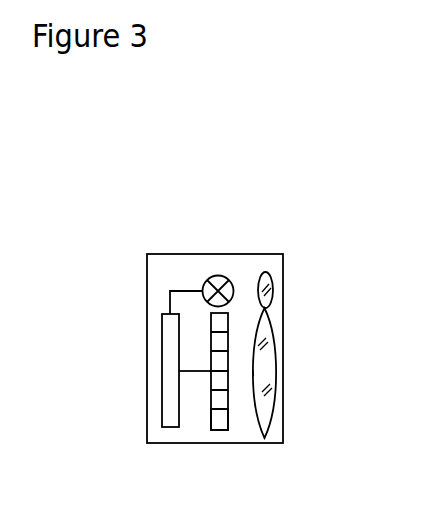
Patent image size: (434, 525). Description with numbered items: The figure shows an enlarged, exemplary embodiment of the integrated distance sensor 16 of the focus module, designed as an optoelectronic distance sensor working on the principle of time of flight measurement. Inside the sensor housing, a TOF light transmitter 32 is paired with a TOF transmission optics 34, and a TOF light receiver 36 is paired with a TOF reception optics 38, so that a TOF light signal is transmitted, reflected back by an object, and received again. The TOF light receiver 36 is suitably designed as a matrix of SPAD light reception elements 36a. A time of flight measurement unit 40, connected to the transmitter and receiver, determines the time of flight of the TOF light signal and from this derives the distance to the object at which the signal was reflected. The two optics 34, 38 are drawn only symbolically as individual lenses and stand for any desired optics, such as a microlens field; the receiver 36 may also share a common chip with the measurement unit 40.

The distance sensor 16 is at (275, 230).
The TOF light transmitter 32 is at (211, 278).
The TOF transmission optics 34 is at (268, 278).
The TOF light receiver 36 is at (208, 392).
The SPAD light reception elements 36a is at (218, 420).
The TOF reception optics 38 is at (270, 417).
The time of flight measurement unit 40 is at (165, 402).